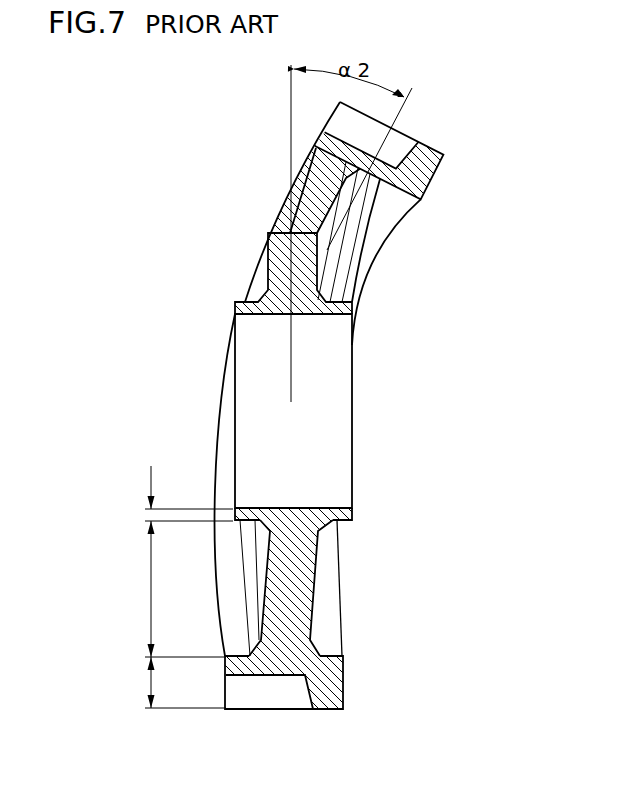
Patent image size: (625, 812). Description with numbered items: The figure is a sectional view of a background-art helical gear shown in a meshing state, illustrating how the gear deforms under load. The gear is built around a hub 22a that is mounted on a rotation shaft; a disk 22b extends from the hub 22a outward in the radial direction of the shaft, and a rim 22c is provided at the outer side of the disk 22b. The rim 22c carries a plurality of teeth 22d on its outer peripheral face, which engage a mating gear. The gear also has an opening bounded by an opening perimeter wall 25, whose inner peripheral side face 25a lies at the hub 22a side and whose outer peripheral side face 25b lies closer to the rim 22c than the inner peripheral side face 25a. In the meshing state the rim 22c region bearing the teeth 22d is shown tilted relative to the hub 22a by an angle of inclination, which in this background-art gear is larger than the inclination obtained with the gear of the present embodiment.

The hub 22a is at (229, 561).
The disk 22b is at (378, 567).
The rim 22c is at (417, 173).
The teeth 22d is at (394, 150).
The opening perimeter wall 25 is at (345, 236).
The inner peripheral side face 25a is at (288, 232).
The outer peripheral side face 25b is at (361, 200).